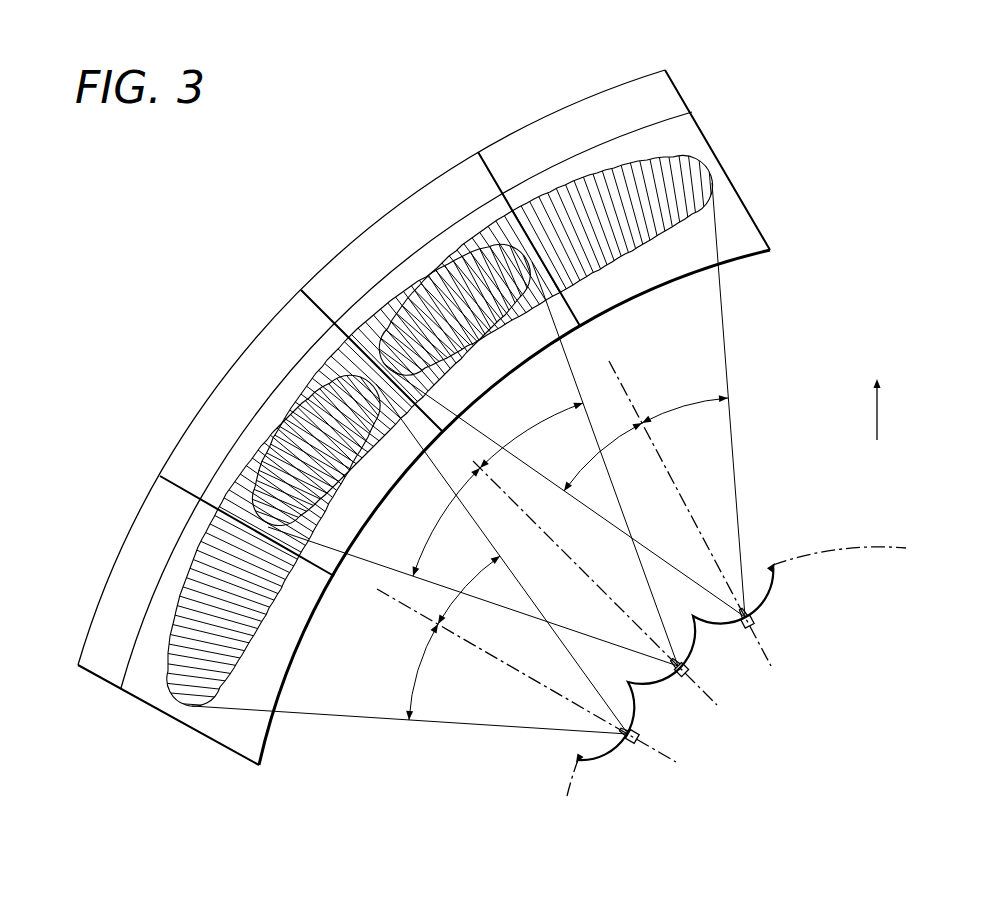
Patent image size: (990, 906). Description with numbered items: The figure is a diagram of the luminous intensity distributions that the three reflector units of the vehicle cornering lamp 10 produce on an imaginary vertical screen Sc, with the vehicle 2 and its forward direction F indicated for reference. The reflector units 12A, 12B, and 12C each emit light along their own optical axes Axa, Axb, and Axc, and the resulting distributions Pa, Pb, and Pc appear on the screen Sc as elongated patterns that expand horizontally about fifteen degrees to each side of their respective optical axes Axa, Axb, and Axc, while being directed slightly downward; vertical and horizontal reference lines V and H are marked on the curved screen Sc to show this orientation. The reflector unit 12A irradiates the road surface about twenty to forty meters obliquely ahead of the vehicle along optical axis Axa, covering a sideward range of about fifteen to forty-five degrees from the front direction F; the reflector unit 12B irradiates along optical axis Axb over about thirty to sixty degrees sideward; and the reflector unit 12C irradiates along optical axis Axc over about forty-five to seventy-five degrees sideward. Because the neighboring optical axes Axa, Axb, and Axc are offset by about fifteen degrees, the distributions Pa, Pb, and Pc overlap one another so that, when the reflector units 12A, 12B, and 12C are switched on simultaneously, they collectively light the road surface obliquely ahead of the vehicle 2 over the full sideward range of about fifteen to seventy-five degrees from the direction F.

The moving path of coating unit 2 is at (877, 545).
The coating unit (nozzle carrier) 10 is at (760, 548).
The reflector unit 12A is at (760, 606).
The reflector unit 12B is at (692, 655).
The reflector unit 12C is at (638, 717).
The imaginary vertical screen Sc is at (735, 215).
The luminous intensity distribution Pa is at (487, 227).
The luminous intensity distribution Pb is at (325, 352).
The luminous intensity distribution Pc is at (205, 522).
The optical axis Axa is at (680, 492).
The optical axis Axb is at (492, 483).
The optical axis Axc is at (512, 670).
The vertical reference direction V is at (365, 357).
The horizontal reference direction H is at (414, 404).
The direction to the front of the vehicle F is at (879, 389).